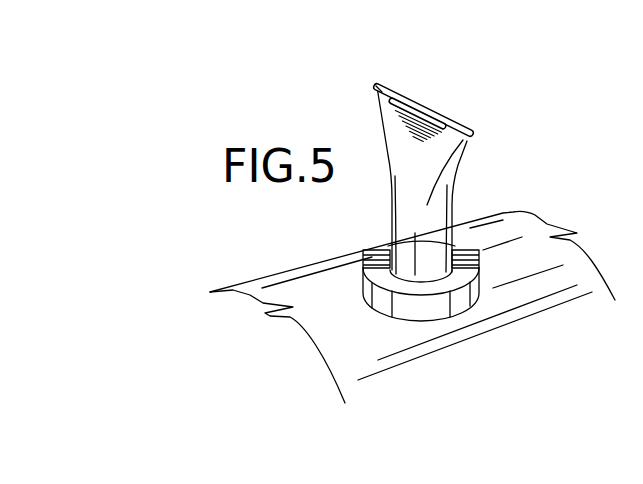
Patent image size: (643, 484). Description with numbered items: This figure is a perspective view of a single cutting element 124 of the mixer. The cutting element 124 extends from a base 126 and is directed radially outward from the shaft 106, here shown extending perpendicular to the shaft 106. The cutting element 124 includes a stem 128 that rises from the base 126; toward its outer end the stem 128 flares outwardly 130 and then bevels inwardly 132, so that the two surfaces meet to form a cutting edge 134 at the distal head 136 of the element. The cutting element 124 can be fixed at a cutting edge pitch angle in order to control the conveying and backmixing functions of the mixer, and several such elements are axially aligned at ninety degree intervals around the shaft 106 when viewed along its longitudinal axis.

The shaft 106 is at (283, 288).
The cutting element 124 is at (413, 146).
The base 126 is at (505, 236).
The stem 128 is at (392, 212).
The outward flare 130 is at (464, 168).
The inward bevel 132 is at (400, 96).
The cutting edge 134 is at (368, 51).
The distal head 136 is at (443, 114).